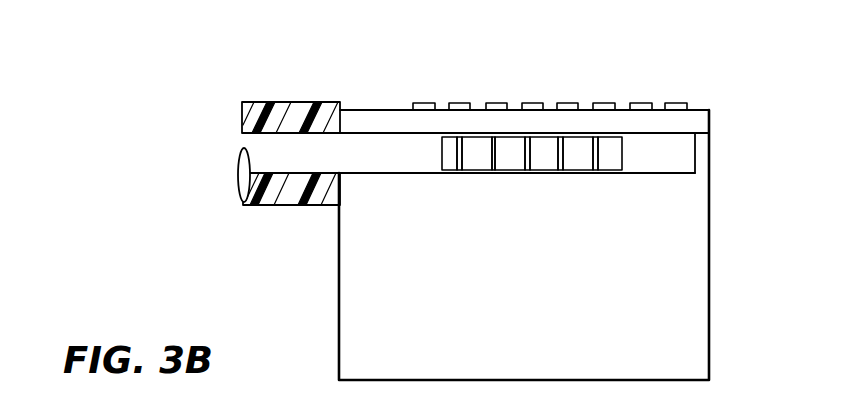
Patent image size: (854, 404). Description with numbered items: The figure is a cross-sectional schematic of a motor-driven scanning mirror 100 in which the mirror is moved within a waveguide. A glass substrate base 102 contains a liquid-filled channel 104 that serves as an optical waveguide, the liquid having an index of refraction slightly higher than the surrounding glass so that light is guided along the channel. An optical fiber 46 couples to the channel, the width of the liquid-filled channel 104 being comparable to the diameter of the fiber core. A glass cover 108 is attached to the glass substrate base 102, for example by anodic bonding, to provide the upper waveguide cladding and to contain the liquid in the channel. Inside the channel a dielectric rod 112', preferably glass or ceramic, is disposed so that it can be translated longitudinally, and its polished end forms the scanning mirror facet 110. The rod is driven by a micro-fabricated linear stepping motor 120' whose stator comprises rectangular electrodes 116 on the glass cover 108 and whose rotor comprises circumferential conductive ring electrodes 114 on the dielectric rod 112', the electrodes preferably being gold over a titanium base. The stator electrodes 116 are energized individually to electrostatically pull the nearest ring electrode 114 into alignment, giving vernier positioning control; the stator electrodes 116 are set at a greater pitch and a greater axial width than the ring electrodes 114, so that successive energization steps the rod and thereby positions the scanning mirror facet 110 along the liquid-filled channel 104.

The optical fiber 46 is at (240, 157).
The motor-driven scanning mirror 100 is at (320, 290).
The glass substrate base 102 is at (546, 347).
The liquid-filled channel 104 is at (695, 157).
The glass cover 108 is at (710, 120).
The scanning mirror facet 110 is at (452, 150).
The dielectric rod 112' is at (616, 189).
The circumferential conductive ring electrodes 114 is at (536, 150).
The stator electrodes 116 is at (525, 103).
The micro-fabricated linear stepping motor 120' is at (739, 70).